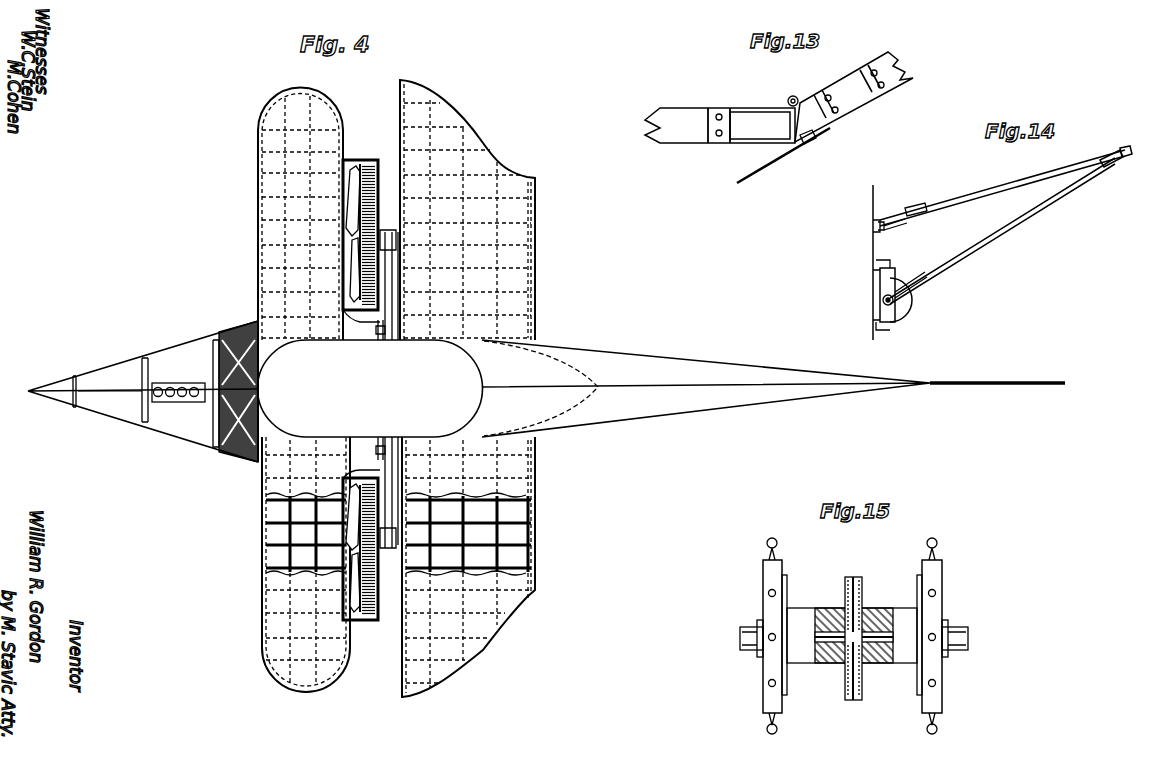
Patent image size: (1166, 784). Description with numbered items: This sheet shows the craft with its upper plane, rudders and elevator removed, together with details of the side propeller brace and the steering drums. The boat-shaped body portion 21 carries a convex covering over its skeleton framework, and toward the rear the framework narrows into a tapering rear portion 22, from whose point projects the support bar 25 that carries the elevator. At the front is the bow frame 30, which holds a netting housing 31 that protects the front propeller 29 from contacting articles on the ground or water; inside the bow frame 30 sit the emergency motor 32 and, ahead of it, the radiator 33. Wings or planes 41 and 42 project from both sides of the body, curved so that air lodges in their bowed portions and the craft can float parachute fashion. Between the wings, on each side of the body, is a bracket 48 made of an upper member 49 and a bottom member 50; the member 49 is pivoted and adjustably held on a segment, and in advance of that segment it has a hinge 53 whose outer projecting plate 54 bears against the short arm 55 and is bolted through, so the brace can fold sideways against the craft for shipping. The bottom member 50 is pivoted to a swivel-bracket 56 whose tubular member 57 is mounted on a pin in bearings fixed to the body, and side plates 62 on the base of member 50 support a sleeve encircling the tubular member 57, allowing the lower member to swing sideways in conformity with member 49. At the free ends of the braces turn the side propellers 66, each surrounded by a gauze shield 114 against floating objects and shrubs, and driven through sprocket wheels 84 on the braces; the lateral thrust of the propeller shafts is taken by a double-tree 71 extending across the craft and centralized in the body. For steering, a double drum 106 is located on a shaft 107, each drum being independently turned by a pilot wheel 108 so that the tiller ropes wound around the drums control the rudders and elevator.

In FIG. 4, the body portion 21 is at (369, 388).
In FIG. 4, the tapering rear portion 22 is at (706, 388).
In FIG. 4, the support bar 25 is at (1012, 382).
In FIG. 4, the front propeller 29 is at (222, 410).
In FIG. 4, the bow frame 30 is at (120, 375).
In FIG. 4, the housing 31 is at (216, 352).
In FIG. 4, the motor 32 is at (178, 383).
In FIG. 4, the radiator 33 is at (140, 383).
In FIG. 4, the wing or plane 41 is at (292, 95).
In FIG. 4, the wing or plane 42 is at (483, 146).
In FIG. 14, the bracket 48 is at (1101, 180).
In FIG. 4, the upper member 49 is at (372, 340).
In FIG. 14, the upper member 49 is at (982, 192).
In FIG. 14, the bottom member 50 is at (983, 250).
In FIG. 13, the hinge 53 is at (792, 96).
In FIG. 14, the hinge 53 is at (910, 216).
In FIG. 13, the projecting plate 54 is at (780, 158).
In FIG. 14, the projecting plate 54 is at (912, 202).
In FIG. 13, the short arm 55 is at (779, 114).
In FIG. 14, the short arm 55 is at (880, 218).
In FIG. 14, the swivel-bracket 56 is at (905, 280).
In FIG. 14, the tubular member 57 is at (880, 291).
In FIG. 14, the side plates 62 is at (908, 294).
In FIG. 4, the side propeller 66 is at (366, 160).
In FIG. 4, the double-tree 71 is at (392, 290).
In FIG. 4, the sprocket wheel 84 is at (358, 458).
In FIG. 15, the double drum 106 is at (860, 577).
In FIG. 15, the shaft 107 is at (970, 636).
In FIG. 15, the pilot wheel 108 is at (766, 575).
In FIG. 4, the gauze shield 114 is at (348, 160).